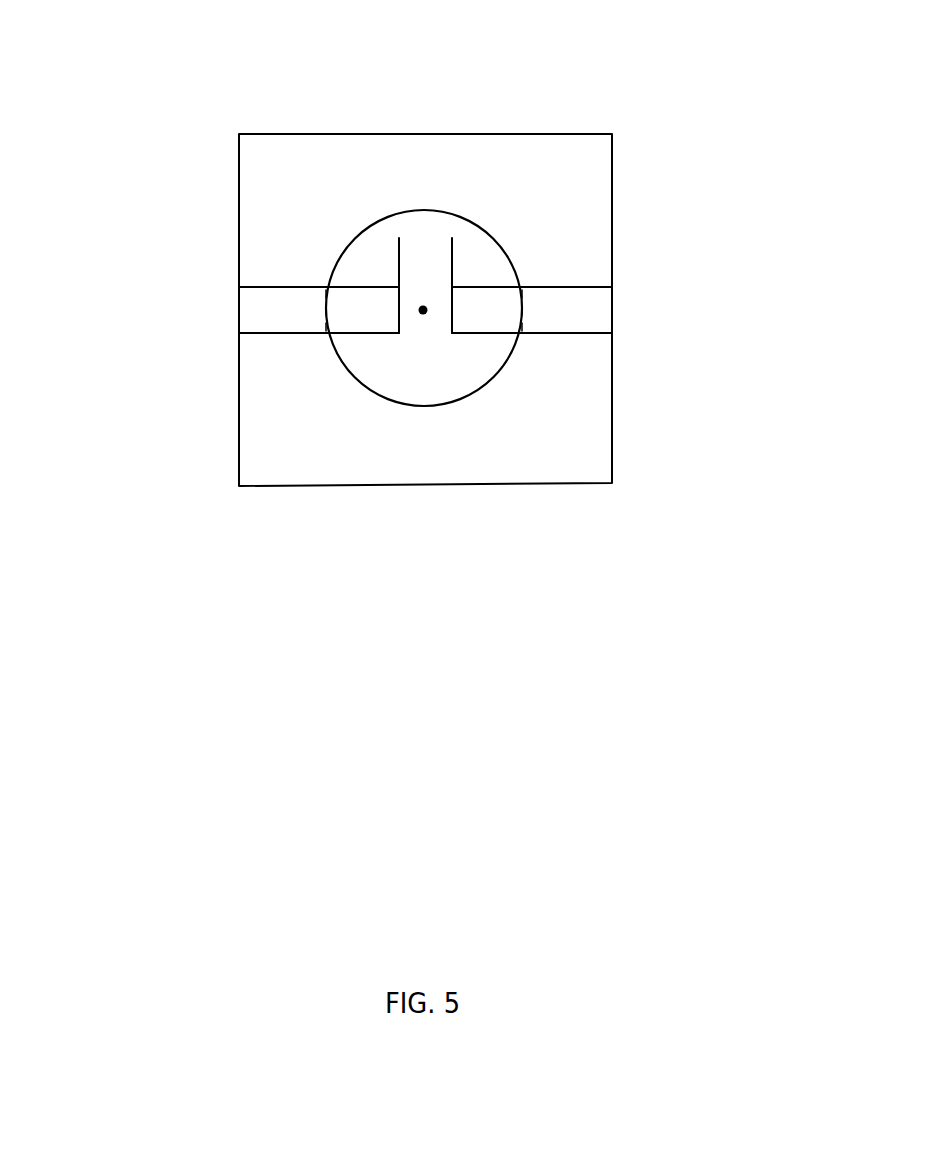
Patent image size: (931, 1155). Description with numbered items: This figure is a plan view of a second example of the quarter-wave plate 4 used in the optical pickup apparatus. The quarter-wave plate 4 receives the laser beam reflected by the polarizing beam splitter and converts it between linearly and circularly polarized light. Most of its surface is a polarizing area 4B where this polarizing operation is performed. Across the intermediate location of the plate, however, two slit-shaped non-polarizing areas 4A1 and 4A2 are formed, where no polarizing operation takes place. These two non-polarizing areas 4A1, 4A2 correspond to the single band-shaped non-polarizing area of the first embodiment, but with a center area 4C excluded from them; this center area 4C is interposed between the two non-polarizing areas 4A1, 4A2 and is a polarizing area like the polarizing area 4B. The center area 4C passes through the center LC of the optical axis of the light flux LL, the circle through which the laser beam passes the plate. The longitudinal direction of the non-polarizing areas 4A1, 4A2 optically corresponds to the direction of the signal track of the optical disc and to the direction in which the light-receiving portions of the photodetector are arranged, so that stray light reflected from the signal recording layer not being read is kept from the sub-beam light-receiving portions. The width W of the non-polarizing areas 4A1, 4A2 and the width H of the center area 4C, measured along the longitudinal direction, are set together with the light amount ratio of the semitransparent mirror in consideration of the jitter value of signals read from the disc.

The quarter-wave plate 4 is at (600, 133).
The polarizing area 4B is at (268, 203).
The non-polarizing area 4A1 is at (262, 322).
The non-polarizing area 4A2 is at (600, 303).
The center area 4C is at (437, 322).
The light flux LL is at (424, 210).
The center of the optical axis LC is at (420, 318).
The width of the non-polarizing areas W is at (296, 243).
The width of the center area H is at (487, 262).